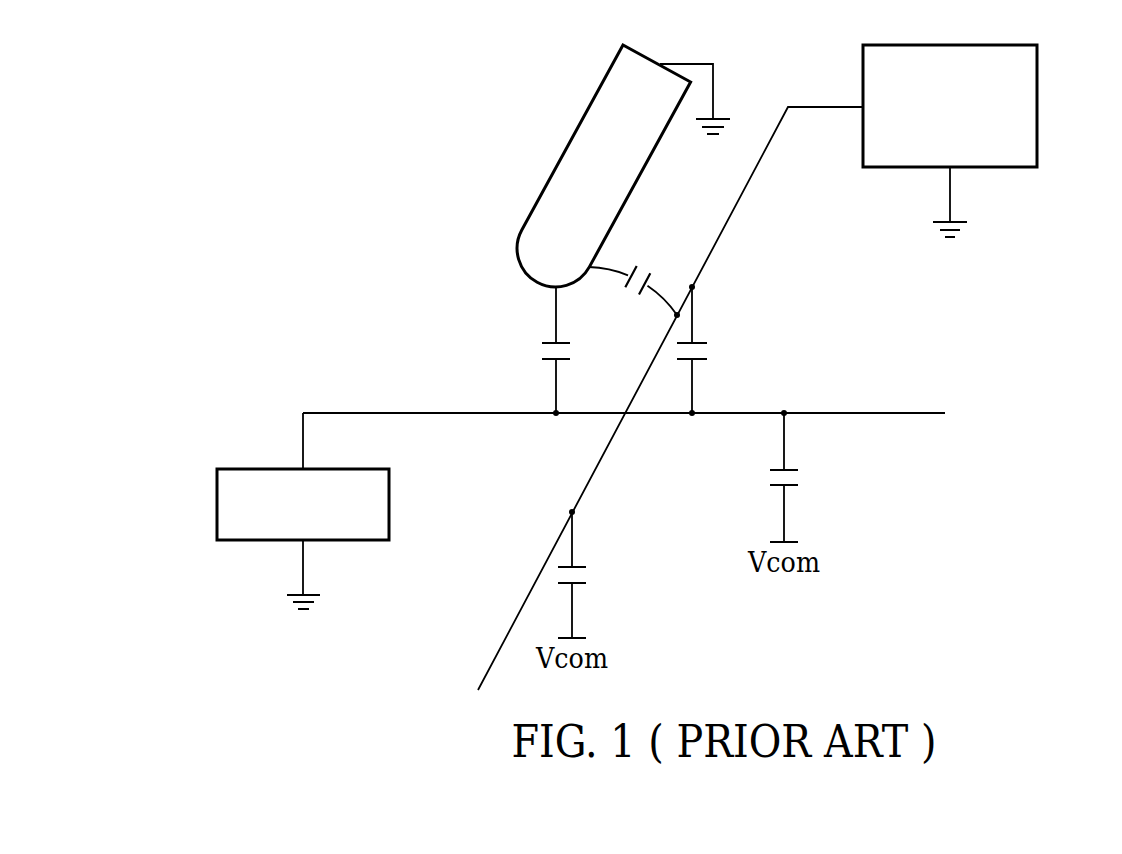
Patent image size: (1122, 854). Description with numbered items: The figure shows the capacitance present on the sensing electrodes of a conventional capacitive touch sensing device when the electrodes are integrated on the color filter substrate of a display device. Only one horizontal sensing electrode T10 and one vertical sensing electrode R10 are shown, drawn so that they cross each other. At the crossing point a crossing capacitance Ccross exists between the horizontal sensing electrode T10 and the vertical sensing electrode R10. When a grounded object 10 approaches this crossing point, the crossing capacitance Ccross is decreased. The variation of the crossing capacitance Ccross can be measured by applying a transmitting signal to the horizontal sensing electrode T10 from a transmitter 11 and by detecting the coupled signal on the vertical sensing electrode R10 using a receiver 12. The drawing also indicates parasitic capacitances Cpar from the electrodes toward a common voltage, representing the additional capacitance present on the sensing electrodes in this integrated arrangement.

The grounded object 10 is at (584, 113).
The transmitter 11 is at (217, 507).
The receiver 12 is at (1037, 107).
The horizontal sensing electrode T10 is at (337, 411).
The vertical sensing electrode R10 is at (490, 666).
The crossing capacitance Ccross is at (708, 350).
The parasitic capacitance to Vcom Cpar is at (587, 576).